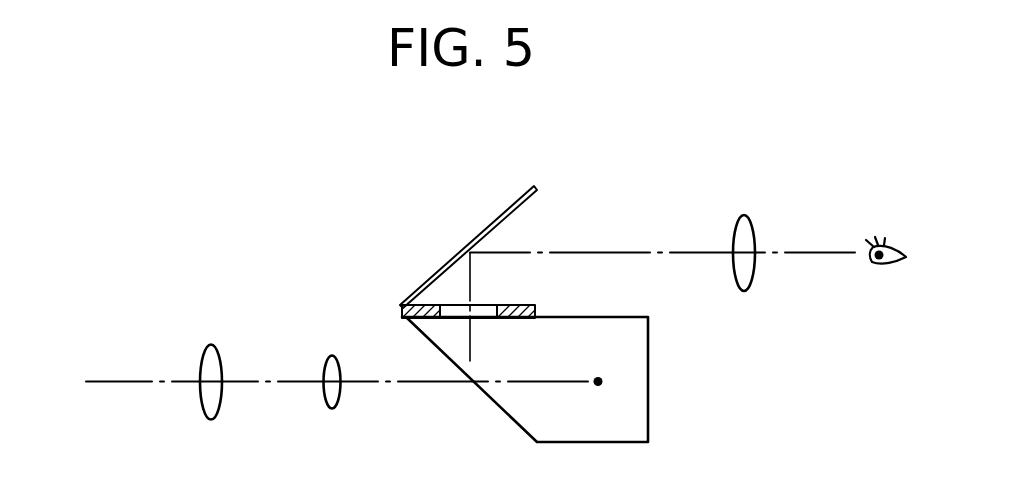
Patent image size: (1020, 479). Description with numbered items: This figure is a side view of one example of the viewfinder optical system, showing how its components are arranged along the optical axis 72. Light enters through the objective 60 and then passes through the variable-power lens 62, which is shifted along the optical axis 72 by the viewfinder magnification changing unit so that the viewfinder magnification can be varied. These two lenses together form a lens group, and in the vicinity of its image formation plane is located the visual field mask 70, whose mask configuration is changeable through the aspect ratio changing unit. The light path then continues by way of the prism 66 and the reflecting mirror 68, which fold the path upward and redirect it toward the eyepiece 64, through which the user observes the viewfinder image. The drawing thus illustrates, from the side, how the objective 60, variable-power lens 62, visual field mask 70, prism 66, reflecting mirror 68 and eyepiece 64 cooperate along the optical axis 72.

The objective 60 is at (210, 344).
The variable-power lens 62 is at (332, 355).
The eyepiece 64 is at (745, 215).
The prism 66 is at (637, 412).
The reflecting mirror 68 is at (473, 236).
The visual field mask 70 is at (540, 303).
The optical axis 72 is at (133, 381).